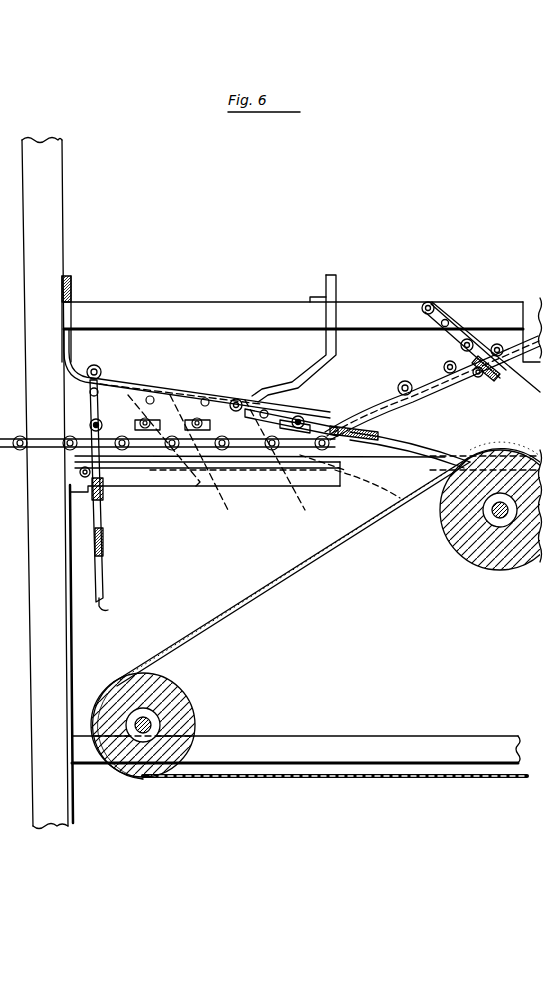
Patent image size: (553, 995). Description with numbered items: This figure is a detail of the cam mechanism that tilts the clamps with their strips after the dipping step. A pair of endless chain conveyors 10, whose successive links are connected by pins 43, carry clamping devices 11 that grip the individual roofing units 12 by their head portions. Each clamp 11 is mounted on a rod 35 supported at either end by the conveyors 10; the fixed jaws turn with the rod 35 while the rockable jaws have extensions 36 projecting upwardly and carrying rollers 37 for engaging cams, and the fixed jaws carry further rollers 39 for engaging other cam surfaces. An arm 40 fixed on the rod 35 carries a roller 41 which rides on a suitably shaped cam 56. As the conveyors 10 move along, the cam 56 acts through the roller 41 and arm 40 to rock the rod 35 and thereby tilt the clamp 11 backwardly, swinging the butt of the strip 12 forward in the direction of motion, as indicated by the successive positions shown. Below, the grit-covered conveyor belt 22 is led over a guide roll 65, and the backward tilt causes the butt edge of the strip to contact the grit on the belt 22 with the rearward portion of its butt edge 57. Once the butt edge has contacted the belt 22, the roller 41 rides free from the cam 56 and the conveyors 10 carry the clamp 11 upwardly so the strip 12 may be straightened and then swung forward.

The endless conveyors 10 is at (382, 398).
The clamping devices 11 is at (104, 488).
The roofing units 12 is at (104, 537).
The conveyor belt 22 is at (338, 566).
The rod 35 is at (101, 426).
The extensions 36 is at (442, 318).
The rollers 37 is at (95, 372).
The rollers 39 is at (82, 476).
The arm 40 is at (90, 402).
The roller 41 is at (89, 392).
The pins 43 is at (34, 483).
The cam 56 is at (172, 398).
The rearward portion of butt edge 57 is at (114, 609).
The guide roll 65 is at (180, 700).